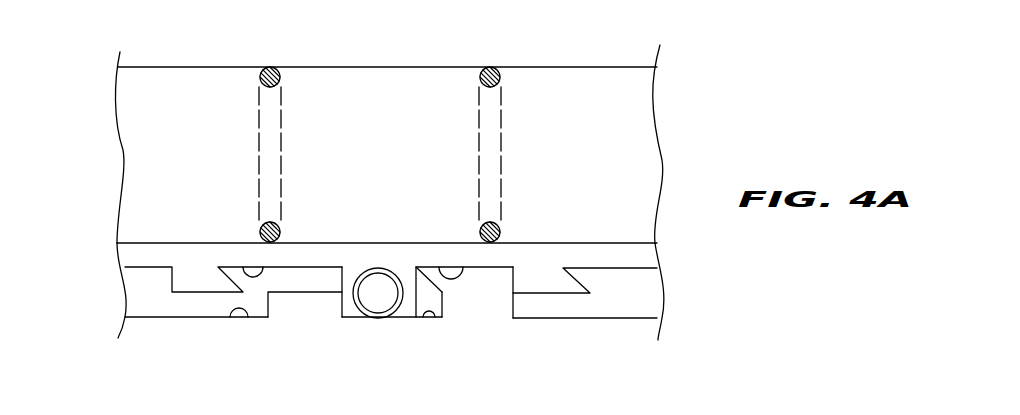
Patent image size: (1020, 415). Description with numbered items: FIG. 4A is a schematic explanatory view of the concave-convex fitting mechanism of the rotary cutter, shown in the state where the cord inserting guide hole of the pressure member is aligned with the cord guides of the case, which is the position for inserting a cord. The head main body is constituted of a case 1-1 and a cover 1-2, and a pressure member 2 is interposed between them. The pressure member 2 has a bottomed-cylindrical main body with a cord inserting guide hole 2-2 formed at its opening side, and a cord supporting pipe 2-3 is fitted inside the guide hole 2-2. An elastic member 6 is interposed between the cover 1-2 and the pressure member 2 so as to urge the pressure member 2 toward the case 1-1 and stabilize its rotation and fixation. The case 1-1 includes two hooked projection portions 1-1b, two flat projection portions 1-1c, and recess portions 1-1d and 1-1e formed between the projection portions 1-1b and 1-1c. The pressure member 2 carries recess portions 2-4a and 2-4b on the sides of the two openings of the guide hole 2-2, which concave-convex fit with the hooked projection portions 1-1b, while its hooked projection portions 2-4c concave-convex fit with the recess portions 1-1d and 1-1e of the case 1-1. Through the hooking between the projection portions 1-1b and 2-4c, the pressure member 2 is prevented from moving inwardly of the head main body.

The case 1-1 is at (640, 325).
The cover 1-2 is at (630, 55).
The pressure member 2 is at (647, 252).
The elastic member 6 is at (502, 70).
The cord inserting guide hole 2-2 is at (360, 308).
The cord supporting pipe 2-3 is at (377, 312).
The recess portion 2-4a is at (440, 267).
The recess portion 2-4b is at (247, 268).
The hooked projection portion 2-4c is at (200, 283).
The hooked projection portion 1-1b is at (493, 283).
The flat projection portion 1-1c is at (305, 300).
The recess portion 1-1d is at (431, 318).
The recess portion 1-1e is at (236, 314).